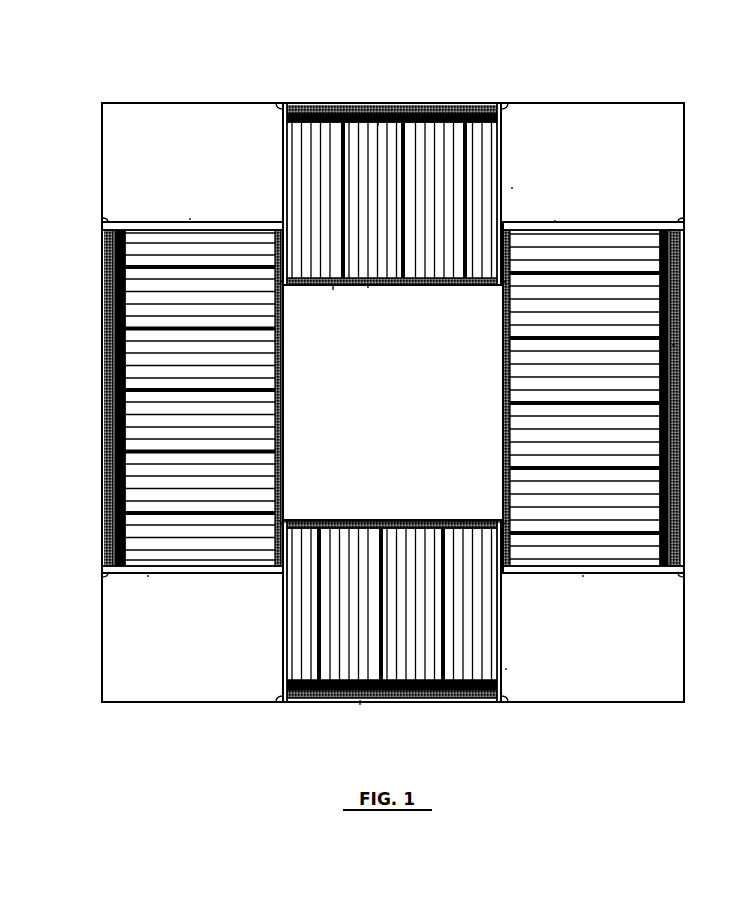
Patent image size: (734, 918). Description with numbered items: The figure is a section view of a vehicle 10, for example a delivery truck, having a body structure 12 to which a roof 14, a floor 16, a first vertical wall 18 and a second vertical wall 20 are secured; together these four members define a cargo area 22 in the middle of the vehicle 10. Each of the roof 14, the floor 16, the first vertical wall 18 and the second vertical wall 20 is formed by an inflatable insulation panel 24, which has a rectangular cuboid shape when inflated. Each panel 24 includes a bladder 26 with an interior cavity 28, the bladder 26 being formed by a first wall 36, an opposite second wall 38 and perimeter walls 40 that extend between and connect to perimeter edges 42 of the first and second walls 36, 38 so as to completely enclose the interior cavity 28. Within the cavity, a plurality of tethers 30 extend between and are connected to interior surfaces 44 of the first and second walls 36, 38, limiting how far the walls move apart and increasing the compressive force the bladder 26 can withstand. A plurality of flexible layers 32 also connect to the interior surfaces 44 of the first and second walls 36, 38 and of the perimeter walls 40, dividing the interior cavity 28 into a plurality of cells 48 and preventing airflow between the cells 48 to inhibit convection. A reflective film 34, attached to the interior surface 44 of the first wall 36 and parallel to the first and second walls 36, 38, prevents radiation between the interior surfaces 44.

The vehicle 10 is at (157, 68).
The body structure 12 is at (652, 92).
The roof 14 is at (512, 145).
The floor 16 is at (518, 652).
The first vertical wall 18 is at (180, 622).
The second vertical wall 20 is at (610, 218).
The cargo area 22 is at (380, 407).
The inflatable insulation panel 24 is at (280, 135).
The bladder 26 is at (512, 187).
The interior cavity 28 is at (378, 122).
The tethers 30 is at (368, 285).
The flexible layers 32 is at (352, 125).
The reflective film 34 is at (482, 110).
The first wall 36 is at (332, 125).
The second wall 38 is at (334, 288).
The perimeter walls 40 is at (282, 158).
The perimeter edges 42 is at (503, 106).
The interior surfaces 44 is at (288, 120).
The cells 48 is at (358, 112).